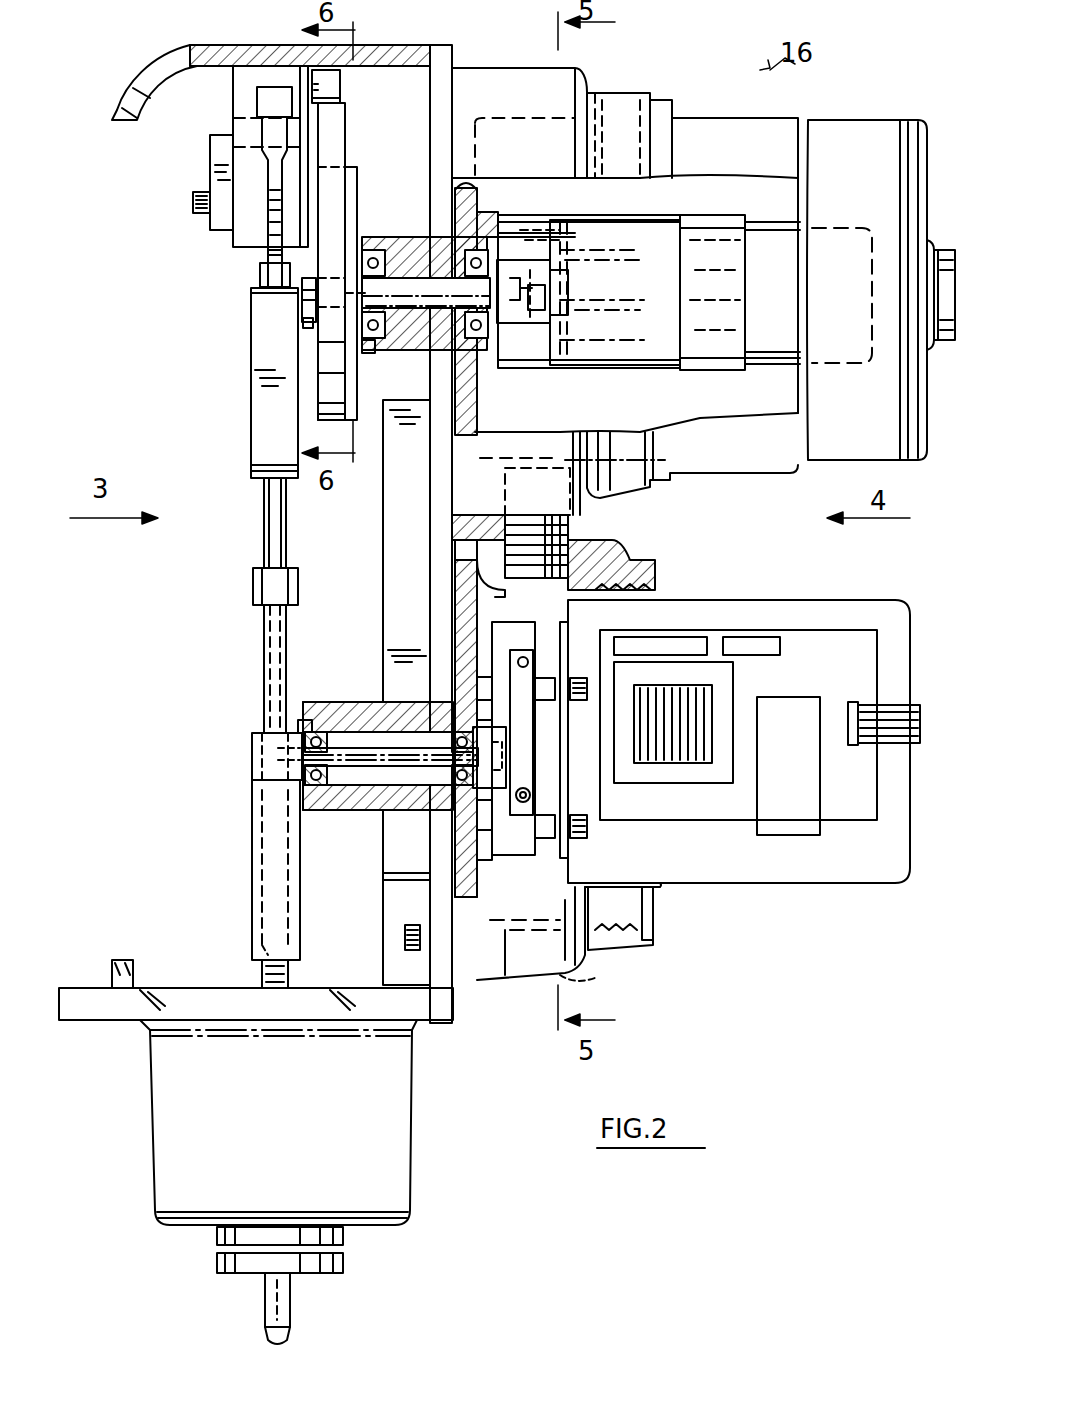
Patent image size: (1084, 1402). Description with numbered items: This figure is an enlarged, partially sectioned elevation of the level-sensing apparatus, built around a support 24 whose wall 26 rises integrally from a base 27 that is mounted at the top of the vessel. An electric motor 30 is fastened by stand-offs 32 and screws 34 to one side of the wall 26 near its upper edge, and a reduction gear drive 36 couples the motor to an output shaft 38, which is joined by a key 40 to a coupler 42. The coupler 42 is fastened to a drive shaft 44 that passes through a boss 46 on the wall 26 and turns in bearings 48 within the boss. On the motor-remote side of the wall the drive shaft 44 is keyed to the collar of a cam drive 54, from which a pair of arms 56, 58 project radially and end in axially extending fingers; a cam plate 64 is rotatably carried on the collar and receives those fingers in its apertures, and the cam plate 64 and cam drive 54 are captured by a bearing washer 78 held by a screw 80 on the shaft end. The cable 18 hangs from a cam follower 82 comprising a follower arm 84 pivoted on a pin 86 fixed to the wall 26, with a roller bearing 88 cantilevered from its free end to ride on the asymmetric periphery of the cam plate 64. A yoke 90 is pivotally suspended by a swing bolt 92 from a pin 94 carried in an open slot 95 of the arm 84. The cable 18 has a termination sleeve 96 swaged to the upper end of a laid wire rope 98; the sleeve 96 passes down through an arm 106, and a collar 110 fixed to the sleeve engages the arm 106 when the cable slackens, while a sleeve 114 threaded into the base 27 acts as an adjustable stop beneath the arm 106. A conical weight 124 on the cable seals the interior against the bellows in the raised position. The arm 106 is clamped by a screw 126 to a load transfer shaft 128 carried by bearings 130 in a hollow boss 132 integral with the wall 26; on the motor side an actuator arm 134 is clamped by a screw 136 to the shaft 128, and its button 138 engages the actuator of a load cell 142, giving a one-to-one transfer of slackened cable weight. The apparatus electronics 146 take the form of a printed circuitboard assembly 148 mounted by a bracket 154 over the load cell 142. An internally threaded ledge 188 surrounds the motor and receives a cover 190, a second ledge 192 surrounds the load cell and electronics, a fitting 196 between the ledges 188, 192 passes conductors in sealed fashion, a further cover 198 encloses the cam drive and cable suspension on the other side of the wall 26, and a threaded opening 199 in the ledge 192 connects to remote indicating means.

The cable 18 is at (258, 646).
The support 24 is at (425, 1058).
The wall 26 is at (455, 50).
The base 27 is at (135, 1012).
The electric motor 30 is at (760, 235).
The stand-offs 32 is at (540, 222).
The screws 34 is at (743, 362).
The reduction gear drive 36 is at (640, 352).
The output shaft 38 is at (560, 288).
The key 40 is at (548, 270).
The coupler 42 is at (538, 325).
The drive shaft 44 is at (412, 282).
The boss 46 is at (410, 352).
The bearings 48 is at (372, 237).
The cam drive 54 is at (348, 160).
The arm 56 is at (355, 182).
The arm 58 is at (360, 390).
The cam plate 64 is at (320, 405).
The bearing washer 78 is at (304, 320).
The screw 80 is at (300, 296).
The cam follower 82 is at (222, 245).
The follower arm 84 is at (245, 70).
The pin 86 is at (192, 203).
The roller bearing 88 is at (341, 84).
The yoke 90 is at (250, 395).
The swing bolt 92 is at (262, 268).
The pin 94 is at (270, 128).
The open slot 95 is at (258, 96).
The termination sleeve 96 is at (264, 522).
The laid wire rope 98 is at (290, 1310).
The arm 106 is at (252, 750).
The collar 110 is at (253, 586).
The sleeve 114 is at (255, 832).
The conical weight 124 is at (345, 1262).
The screw 126 is at (297, 727).
The load transfer shaft 128 is at (378, 768).
The bearings 130 is at (307, 730).
The hollow boss 132 is at (350, 712).
The actuator arm 134 is at (530, 760).
The screw 136 is at (555, 800).
The button 138 is at (525, 655).
The load cell 142 is at (518, 858).
The apparatus electronics 146 is at (748, 606).
The printed circuitboard assembly 148 is at (880, 606).
The bracket 154 is at (568, 855).
The ledge 188 is at (618, 100).
The cover 190 is at (828, 128).
The ledge 192 is at (610, 566).
The fitting 196 is at (570, 528).
The cover 198 is at (165, 50).
The internally threaded opening 199 is at (600, 978).